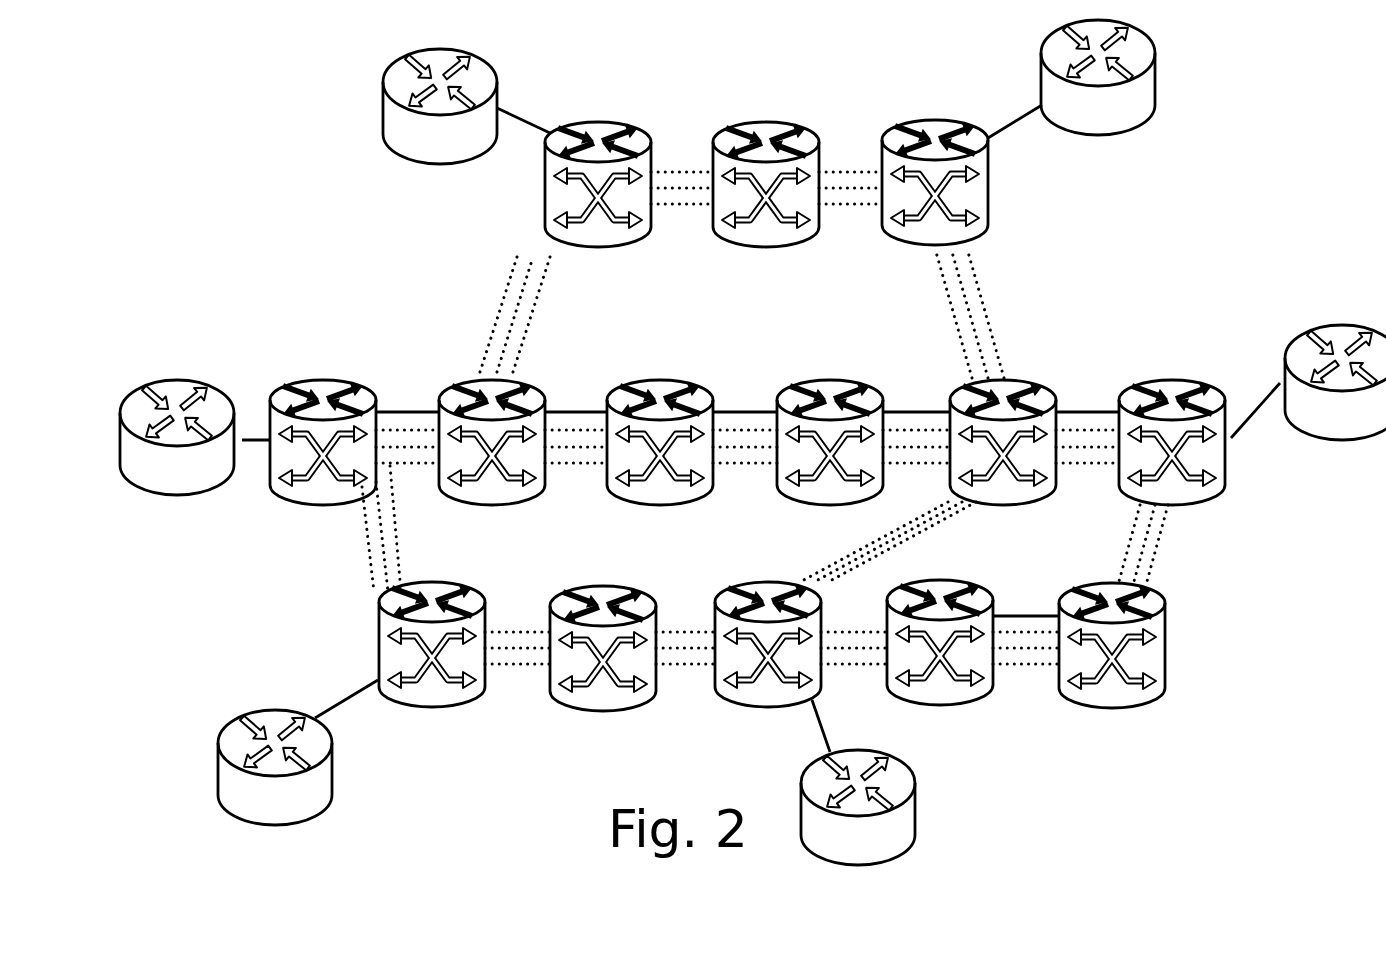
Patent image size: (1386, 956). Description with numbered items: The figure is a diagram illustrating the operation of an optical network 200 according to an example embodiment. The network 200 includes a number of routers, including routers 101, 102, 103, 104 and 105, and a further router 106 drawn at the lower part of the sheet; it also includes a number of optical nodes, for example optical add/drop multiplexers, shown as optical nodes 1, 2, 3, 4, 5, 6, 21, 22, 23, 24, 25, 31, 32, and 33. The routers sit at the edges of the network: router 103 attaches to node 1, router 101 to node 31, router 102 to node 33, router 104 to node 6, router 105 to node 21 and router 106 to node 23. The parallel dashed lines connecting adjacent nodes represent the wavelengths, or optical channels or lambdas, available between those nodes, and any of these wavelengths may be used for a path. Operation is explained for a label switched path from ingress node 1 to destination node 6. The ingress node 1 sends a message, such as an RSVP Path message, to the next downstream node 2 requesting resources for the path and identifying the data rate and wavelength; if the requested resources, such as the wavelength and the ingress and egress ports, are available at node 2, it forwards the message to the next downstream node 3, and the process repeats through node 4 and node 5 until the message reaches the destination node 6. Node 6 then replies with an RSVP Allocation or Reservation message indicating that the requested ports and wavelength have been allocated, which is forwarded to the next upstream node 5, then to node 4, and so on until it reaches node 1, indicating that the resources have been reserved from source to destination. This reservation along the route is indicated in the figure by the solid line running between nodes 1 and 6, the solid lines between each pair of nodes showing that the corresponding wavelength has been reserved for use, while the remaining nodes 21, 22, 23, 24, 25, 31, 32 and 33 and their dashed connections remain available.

The optical node 1 is at (323, 427).
The optical node 2 is at (492, 427).
The optical node 3 is at (660, 427).
The optical node 4 is at (830, 427).
The optical node 5 is at (1003, 427).
The optical node 6 is at (1172, 427).
The optical node 21 is at (432, 630).
The optical node 22 is at (603, 632).
The optical node 23 is at (768, 630).
The optical node 24 is at (940, 628).
The optical node 25 is at (1112, 630).
The optical node 31 is at (598, 169).
The optical node 32 is at (766, 169).
The optical node 33 is at (935, 167).
The router 101 is at (443, 98).
The router 102 is at (1082, 77).
The router 103 is at (177, 425).
The router 104 is at (1335, 368).
The router 105 is at (275, 756).
The router 106 is at (882, 807).
The network 200 is at (497, 835).